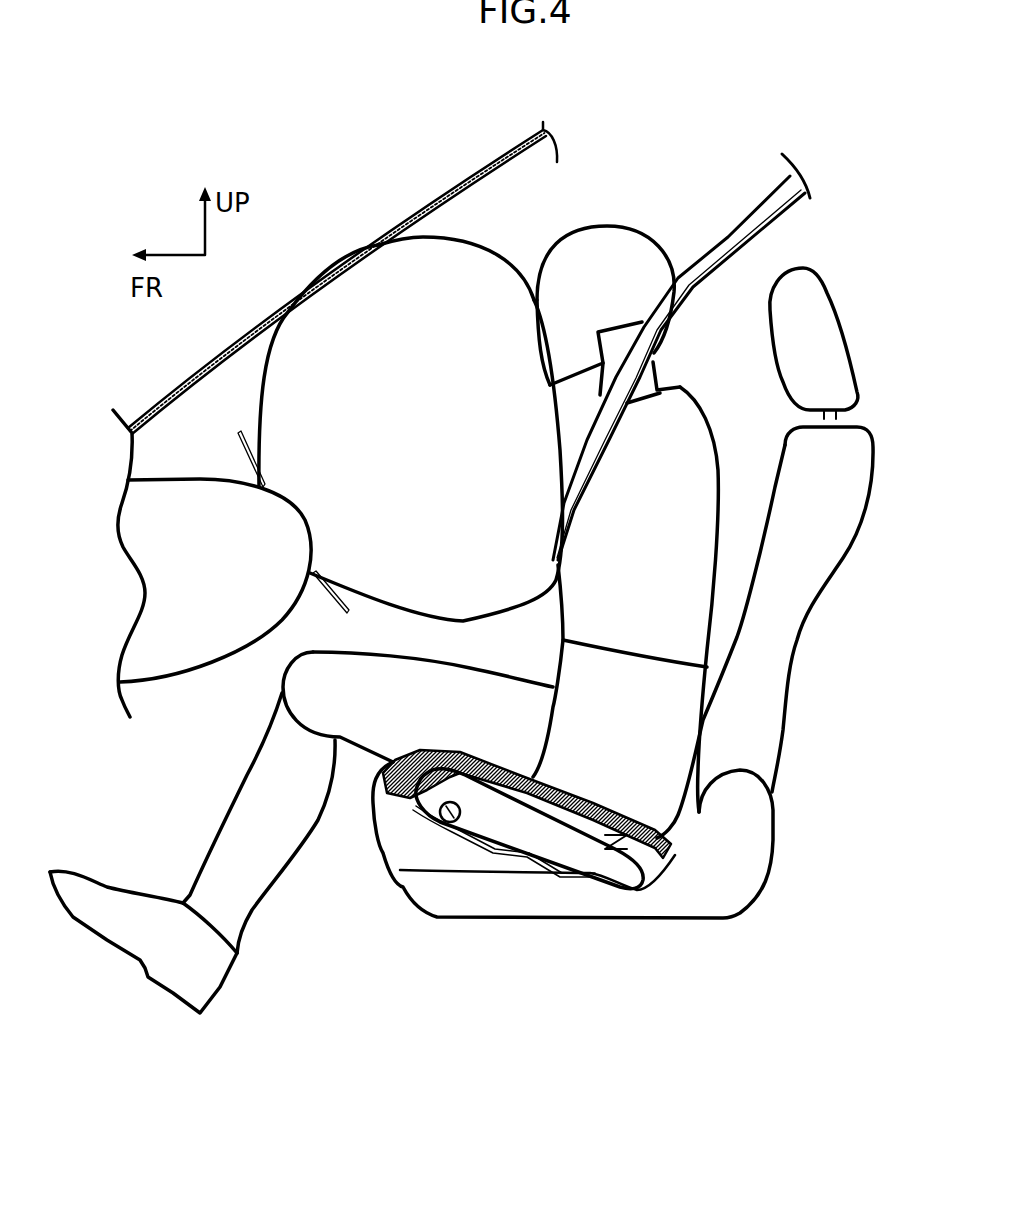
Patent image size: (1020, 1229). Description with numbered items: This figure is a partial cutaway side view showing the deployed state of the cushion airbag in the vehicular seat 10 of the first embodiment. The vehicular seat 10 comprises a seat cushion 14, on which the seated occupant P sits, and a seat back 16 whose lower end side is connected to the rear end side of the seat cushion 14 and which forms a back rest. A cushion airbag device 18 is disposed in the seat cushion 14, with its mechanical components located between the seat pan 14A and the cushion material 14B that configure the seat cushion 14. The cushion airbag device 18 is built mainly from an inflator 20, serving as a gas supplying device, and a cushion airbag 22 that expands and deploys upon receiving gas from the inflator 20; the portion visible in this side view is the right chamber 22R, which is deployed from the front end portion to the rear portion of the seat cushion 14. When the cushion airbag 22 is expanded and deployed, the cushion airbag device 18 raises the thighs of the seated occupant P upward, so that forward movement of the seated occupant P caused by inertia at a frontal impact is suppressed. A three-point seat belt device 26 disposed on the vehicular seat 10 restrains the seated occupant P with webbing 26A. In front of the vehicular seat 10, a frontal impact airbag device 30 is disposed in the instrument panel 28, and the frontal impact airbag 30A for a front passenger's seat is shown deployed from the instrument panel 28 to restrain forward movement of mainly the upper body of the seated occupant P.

The vehicular seat 10 is at (631, 650).
The seat cushion 14 is at (573, 871).
The seat pan 14A is at (587, 885).
The cushion material 14B is at (555, 790).
The seat back 16 is at (775, 658).
The cushion airbag device 18 is at (536, 893).
The inflator 20 is at (445, 822).
The cushion airbag 22 is at (503, 826).
The right chamber 22R is at (528, 901).
The seat belt device 26 is at (681, 323).
The webbing 26A is at (728, 236).
The instrument panel 28 is at (272, 488).
The frontal impact airbag device 30 is at (426, 395).
The frontal impact airbag 30A is at (497, 255).
The seated occupant P is at (700, 387).